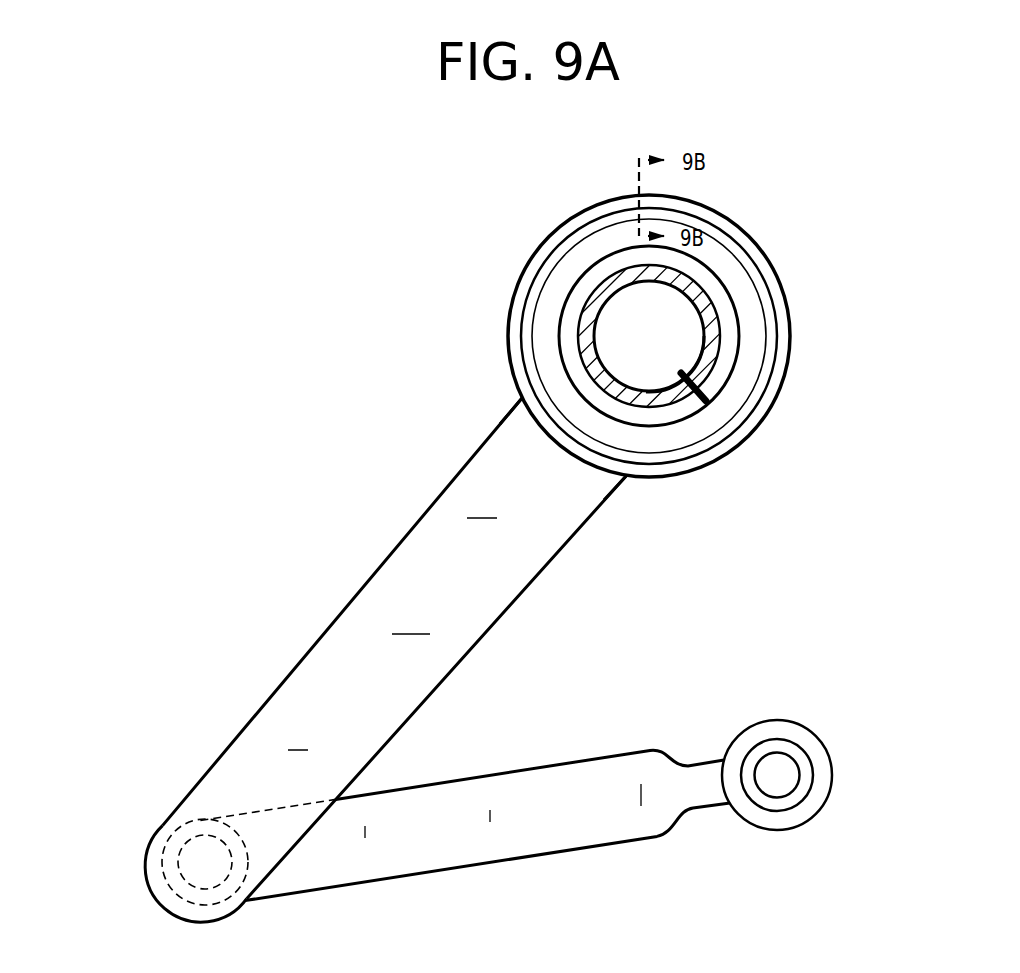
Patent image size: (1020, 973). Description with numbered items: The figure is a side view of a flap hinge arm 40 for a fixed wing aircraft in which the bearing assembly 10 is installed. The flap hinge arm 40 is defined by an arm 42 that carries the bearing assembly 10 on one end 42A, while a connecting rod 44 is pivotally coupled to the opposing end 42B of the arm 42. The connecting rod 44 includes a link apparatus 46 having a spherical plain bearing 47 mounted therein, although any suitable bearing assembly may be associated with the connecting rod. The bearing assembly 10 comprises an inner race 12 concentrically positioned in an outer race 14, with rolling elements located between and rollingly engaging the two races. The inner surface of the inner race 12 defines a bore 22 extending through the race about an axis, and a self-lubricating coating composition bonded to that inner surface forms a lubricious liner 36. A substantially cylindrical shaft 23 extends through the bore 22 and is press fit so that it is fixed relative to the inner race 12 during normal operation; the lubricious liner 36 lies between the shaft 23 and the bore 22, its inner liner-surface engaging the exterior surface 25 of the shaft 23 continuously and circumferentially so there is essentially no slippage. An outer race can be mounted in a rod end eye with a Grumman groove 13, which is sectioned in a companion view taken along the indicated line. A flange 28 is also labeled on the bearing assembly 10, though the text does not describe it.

The bearing assembly 10 is at (582, 205).
The Grumman groove 13 is at (562, 250).
The outer sleeve flange 28 is at (520, 275).
The outer race 14 is at (722, 265).
The inner race 12 is at (720, 302).
The lubricious liner 36 is at (705, 357).
The shaft 23 is at (673, 318).
The exterior surface 25 is at (650, 392).
The bore 22 is at (707, 402).
The flap hinge arm 40 is at (456, 633).
The arm 42 is at (338, 590).
The end 42A is at (478, 388).
The opposing end 42B is at (140, 810).
The connecting rod 44 is at (513, 860).
The link apparatus 46 is at (798, 735).
The spherical plain bearing 47 is at (793, 813).